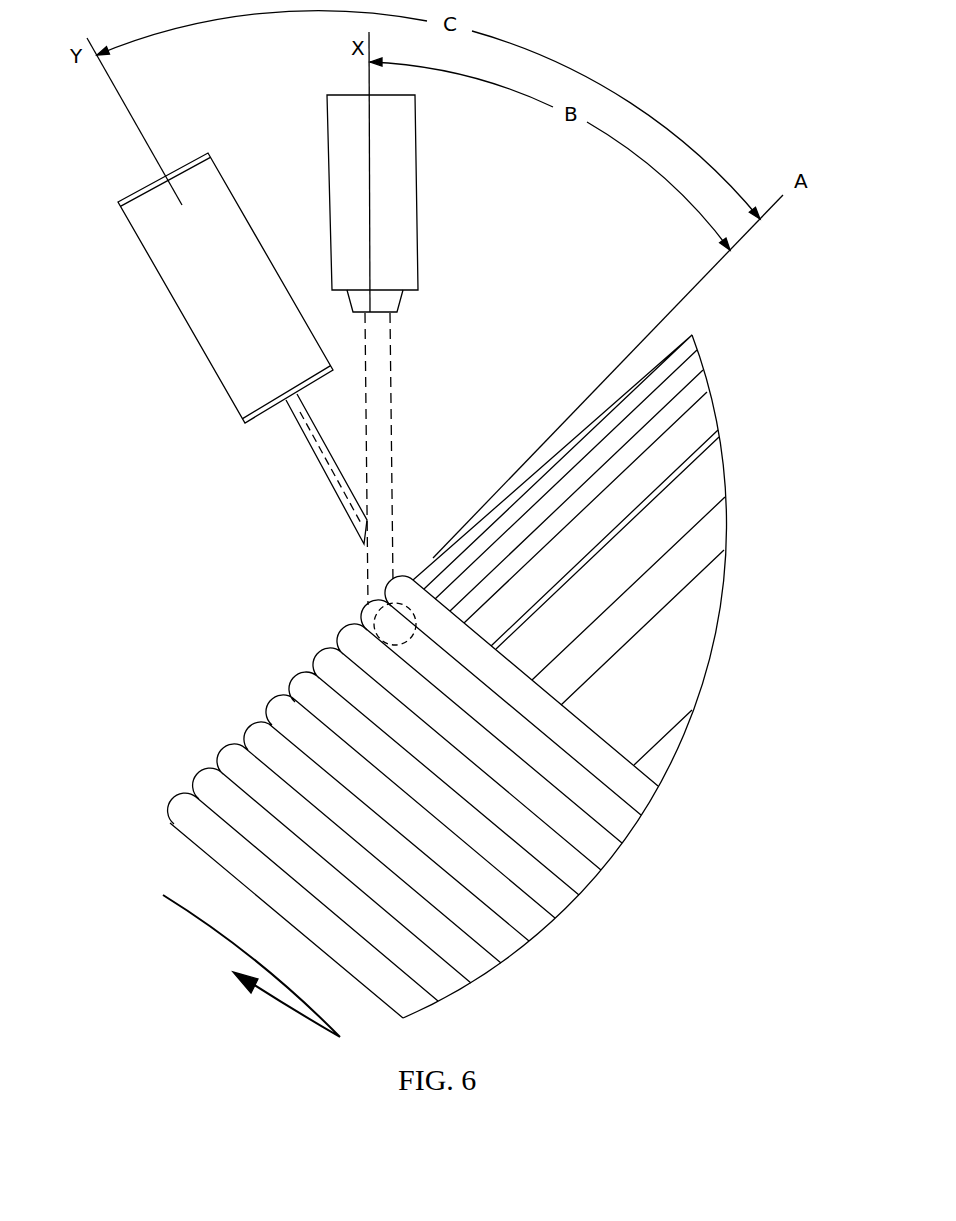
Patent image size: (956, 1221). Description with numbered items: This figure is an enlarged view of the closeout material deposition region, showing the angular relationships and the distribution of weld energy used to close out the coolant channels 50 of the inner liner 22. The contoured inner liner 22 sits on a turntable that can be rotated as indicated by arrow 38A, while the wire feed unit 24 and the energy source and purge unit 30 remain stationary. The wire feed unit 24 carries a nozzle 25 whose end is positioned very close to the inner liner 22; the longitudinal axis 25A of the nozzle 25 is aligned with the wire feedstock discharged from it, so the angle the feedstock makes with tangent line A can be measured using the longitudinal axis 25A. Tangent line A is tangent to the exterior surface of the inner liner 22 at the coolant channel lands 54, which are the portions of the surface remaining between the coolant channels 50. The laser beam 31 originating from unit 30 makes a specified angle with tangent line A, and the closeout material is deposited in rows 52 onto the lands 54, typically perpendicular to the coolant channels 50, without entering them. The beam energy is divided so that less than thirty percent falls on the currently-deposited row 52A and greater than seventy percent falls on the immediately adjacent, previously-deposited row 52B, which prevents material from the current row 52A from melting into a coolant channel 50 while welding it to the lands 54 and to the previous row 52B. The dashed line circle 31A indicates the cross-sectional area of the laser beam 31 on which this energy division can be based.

The inner liner 22 is at (732, 568).
The wire feed unit 24 is at (183, 297).
The nozzle 25 is at (303, 440).
The longitudinal axis of nozzle 25A is at (330, 470).
The energy source and purge unit 30 is at (418, 168).
The laser beam 31 is at (390, 345).
The dashed line circle 31A is at (372, 618).
The arrow 38A is at (292, 1022).
The coolant channels 50 is at (698, 360).
The rows 52 is at (477, 968).
The currently-deposited row 52A is at (648, 792).
The previously-deposited row 52B is at (612, 822).
The coolant channel lands 54 is at (700, 393).